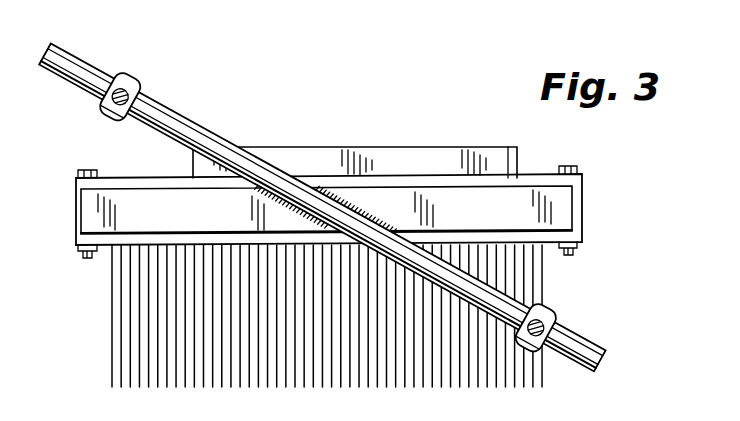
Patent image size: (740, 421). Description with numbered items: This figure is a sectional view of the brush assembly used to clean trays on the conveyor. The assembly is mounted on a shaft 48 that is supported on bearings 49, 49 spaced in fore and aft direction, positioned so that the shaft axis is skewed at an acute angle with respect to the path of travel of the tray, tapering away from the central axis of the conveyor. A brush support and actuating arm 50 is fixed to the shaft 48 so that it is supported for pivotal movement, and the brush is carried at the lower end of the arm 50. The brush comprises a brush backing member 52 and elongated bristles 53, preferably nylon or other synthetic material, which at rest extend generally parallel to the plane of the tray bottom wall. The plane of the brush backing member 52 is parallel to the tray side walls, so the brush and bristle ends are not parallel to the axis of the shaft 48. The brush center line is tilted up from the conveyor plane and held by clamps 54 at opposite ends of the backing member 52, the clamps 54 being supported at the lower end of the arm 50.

The shaft 48 is at (606, 349).
The bearings 49 is at (143, 83).
The brush support and actuating arm 50 is at (405, 147).
The brush backing member 52 is at (443, 192).
The bristles 53 is at (123, 310).
The clamps 54 is at (83, 179).